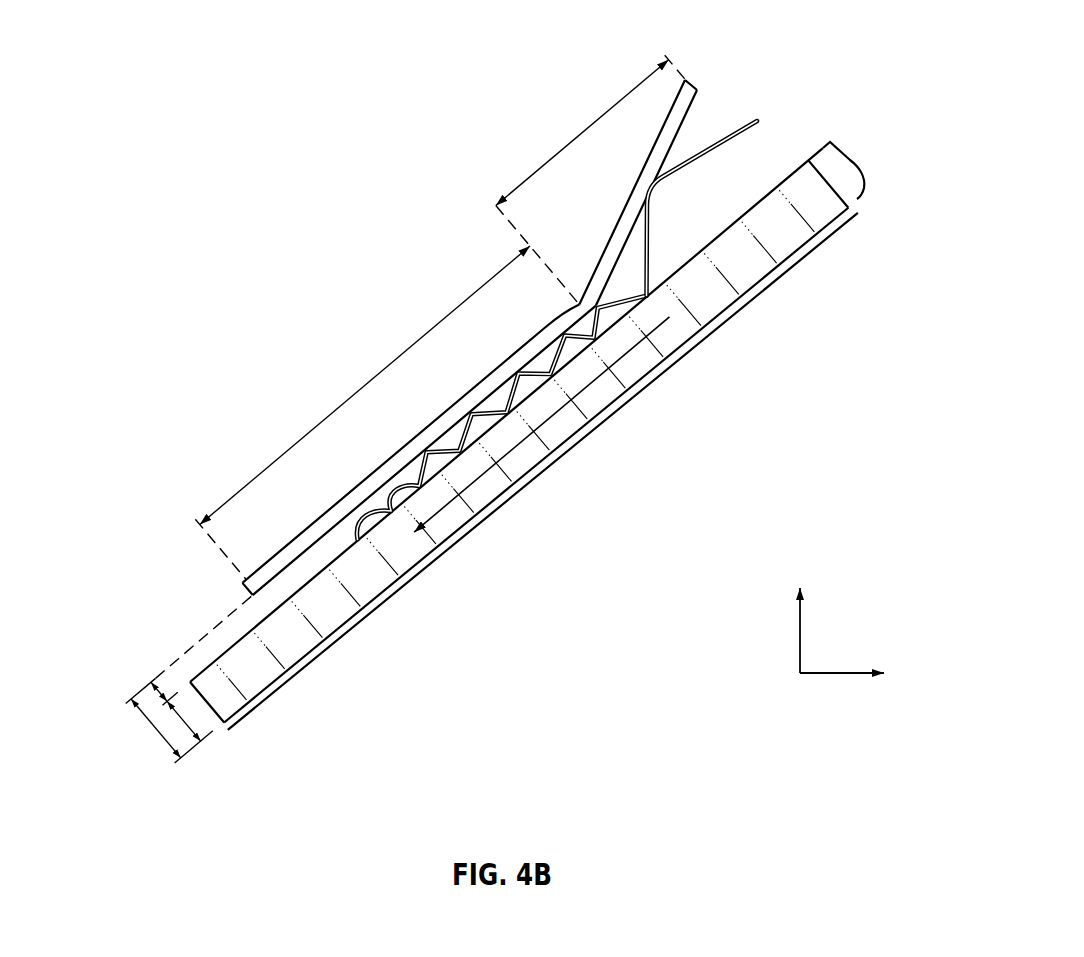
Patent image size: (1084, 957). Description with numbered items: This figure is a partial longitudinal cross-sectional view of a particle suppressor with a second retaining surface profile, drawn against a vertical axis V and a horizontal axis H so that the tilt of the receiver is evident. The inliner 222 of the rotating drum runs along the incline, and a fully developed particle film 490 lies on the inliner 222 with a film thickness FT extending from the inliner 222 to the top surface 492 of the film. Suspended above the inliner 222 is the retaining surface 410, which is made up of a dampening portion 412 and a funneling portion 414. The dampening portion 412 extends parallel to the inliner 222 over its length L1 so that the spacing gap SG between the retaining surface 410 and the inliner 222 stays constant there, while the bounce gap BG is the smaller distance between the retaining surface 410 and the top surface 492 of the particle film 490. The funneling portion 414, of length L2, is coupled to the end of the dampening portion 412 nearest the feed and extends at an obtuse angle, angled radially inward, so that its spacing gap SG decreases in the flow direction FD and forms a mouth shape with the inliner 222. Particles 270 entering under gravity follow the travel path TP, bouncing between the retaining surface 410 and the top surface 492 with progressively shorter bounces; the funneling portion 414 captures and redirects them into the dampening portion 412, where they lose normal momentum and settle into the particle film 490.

The inliner 222 is at (762, 283).
The particles 270 is at (698, 326).
The retaining surface 410 is at (469, 366).
The dampening portion 412 is at (385, 464).
The funneling portion 414 is at (624, 210).
The particle film 490 is at (856, 165).
The top surface of the particle film 492 is at (768, 192).
The particle travel path TP is at (755, 120).
The flow direction FD is at (557, 411).
The length of the dampening portion L1 is at (367, 383).
The length of the funneling portion L2 is at (600, 117).
The bounce gap BG is at (133, 702).
The spacing gap SG is at (153, 731).
The film thickness FT is at (217, 741).
The vertical axis V is at (800, 609).
The horizontal axis H is at (857, 675).